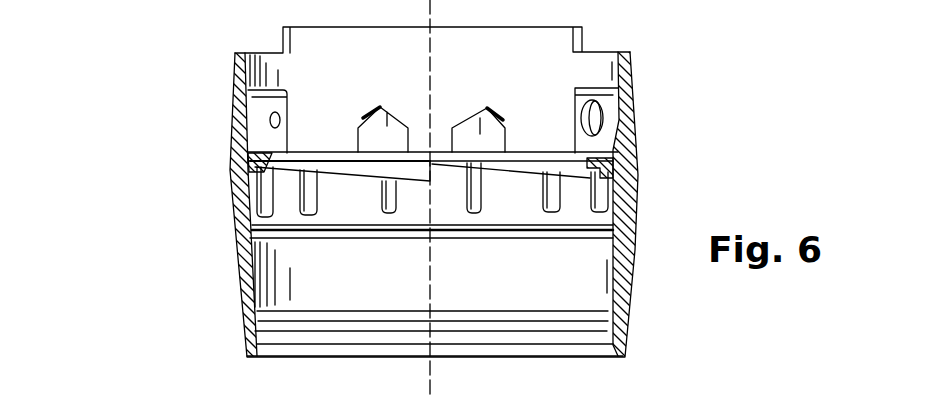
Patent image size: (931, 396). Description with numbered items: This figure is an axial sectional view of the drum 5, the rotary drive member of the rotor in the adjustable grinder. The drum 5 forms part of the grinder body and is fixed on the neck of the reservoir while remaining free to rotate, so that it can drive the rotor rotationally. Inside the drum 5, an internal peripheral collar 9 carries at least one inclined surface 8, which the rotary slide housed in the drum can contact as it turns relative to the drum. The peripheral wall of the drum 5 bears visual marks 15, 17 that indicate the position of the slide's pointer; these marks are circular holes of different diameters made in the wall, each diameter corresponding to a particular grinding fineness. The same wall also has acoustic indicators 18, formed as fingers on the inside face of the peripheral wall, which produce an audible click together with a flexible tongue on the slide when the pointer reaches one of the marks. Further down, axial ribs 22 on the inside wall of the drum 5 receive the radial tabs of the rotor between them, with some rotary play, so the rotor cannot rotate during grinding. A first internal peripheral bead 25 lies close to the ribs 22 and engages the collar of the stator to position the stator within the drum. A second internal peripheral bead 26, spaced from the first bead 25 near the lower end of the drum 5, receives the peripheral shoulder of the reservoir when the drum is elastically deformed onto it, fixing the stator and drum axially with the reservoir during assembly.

The drum 5 is at (134, 226).
The inclined surface 8 is at (492, 165).
The internal peripheral collar 9 is at (240, 160).
The visual mark 15 is at (269, 119).
The visual mark 17 is at (600, 120).
The acoustic indicators 18 is at (380, 107).
The axial ribs 22 is at (263, 195).
The first internal peripheral bead 25 is at (253, 232).
The second internal peripheral bead 26 is at (250, 322).